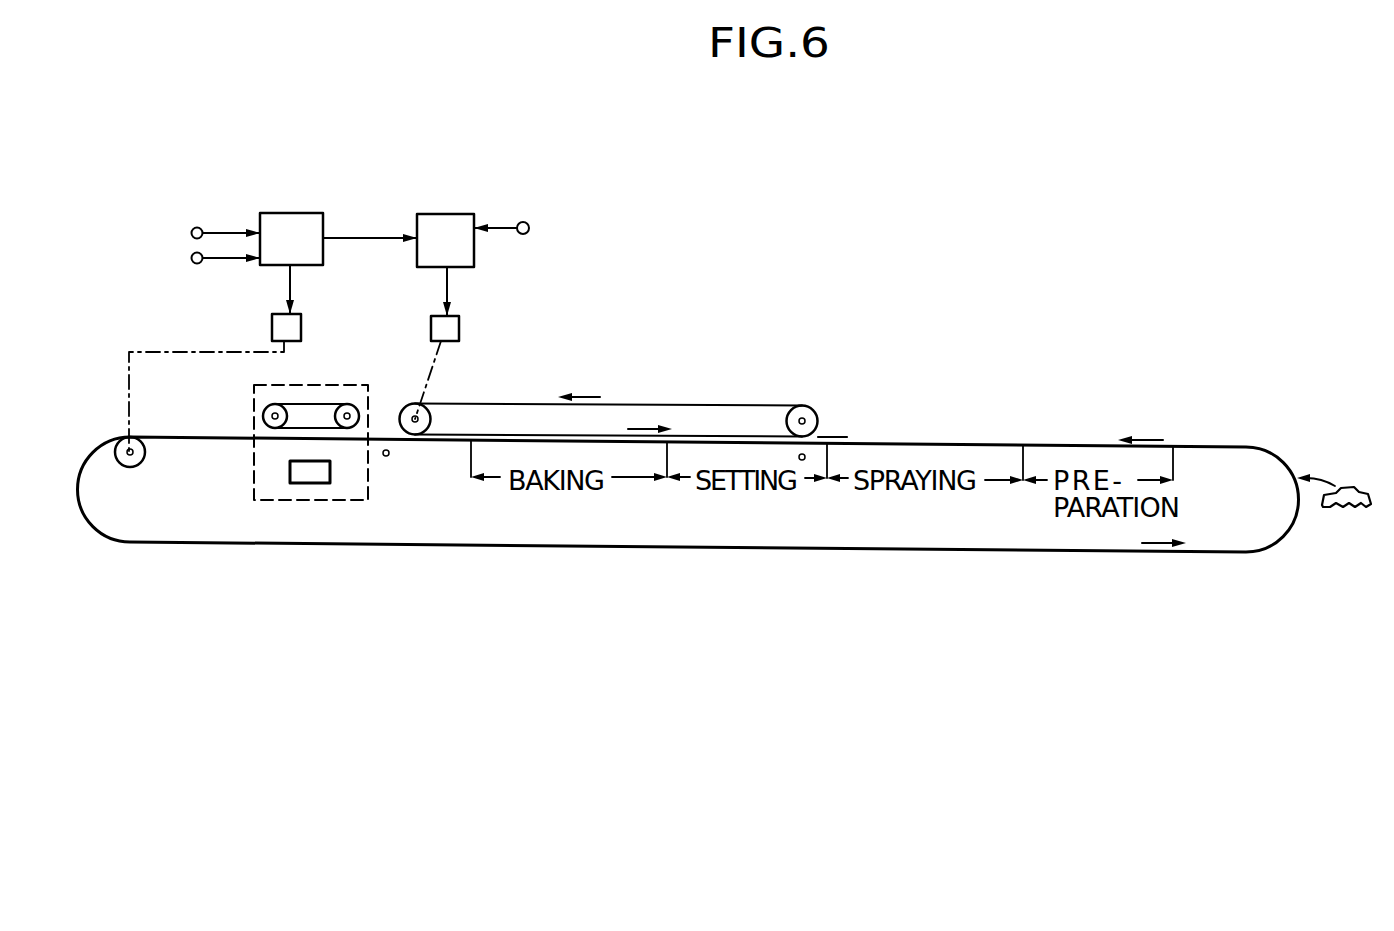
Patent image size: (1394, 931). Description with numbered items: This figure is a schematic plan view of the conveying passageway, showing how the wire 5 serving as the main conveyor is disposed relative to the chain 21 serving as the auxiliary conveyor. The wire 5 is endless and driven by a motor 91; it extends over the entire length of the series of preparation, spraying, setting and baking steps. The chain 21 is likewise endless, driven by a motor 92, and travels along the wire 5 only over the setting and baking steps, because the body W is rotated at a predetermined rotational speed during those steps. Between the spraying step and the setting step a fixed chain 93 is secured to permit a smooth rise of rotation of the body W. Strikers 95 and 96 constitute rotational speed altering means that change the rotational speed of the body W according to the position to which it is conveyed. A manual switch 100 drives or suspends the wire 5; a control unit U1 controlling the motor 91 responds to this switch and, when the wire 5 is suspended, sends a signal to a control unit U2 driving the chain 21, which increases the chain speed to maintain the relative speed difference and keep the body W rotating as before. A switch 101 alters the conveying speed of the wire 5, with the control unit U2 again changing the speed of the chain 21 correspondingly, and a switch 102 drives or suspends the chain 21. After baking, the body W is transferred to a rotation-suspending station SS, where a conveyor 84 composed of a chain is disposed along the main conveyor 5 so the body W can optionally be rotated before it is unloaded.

The wire 5 is at (1077, 552).
The chain 21 is at (675, 404).
The conveyor 84 is at (327, 404).
The motor 91 is at (272, 328).
The motor 92 is at (431, 329).
The fixed chain 93 is at (833, 436).
The striker 95 is at (806, 457).
The striker 96 is at (389, 456).
The manual switch 100 is at (191, 229).
The switch 101 is at (191, 256).
The switch 102 is at (524, 222).
The control unit U1 is at (302, 213).
The control unit U2 is at (446, 214).
The rotation-suspending station SS is at (247, 490).
The body W is at (1365, 492).